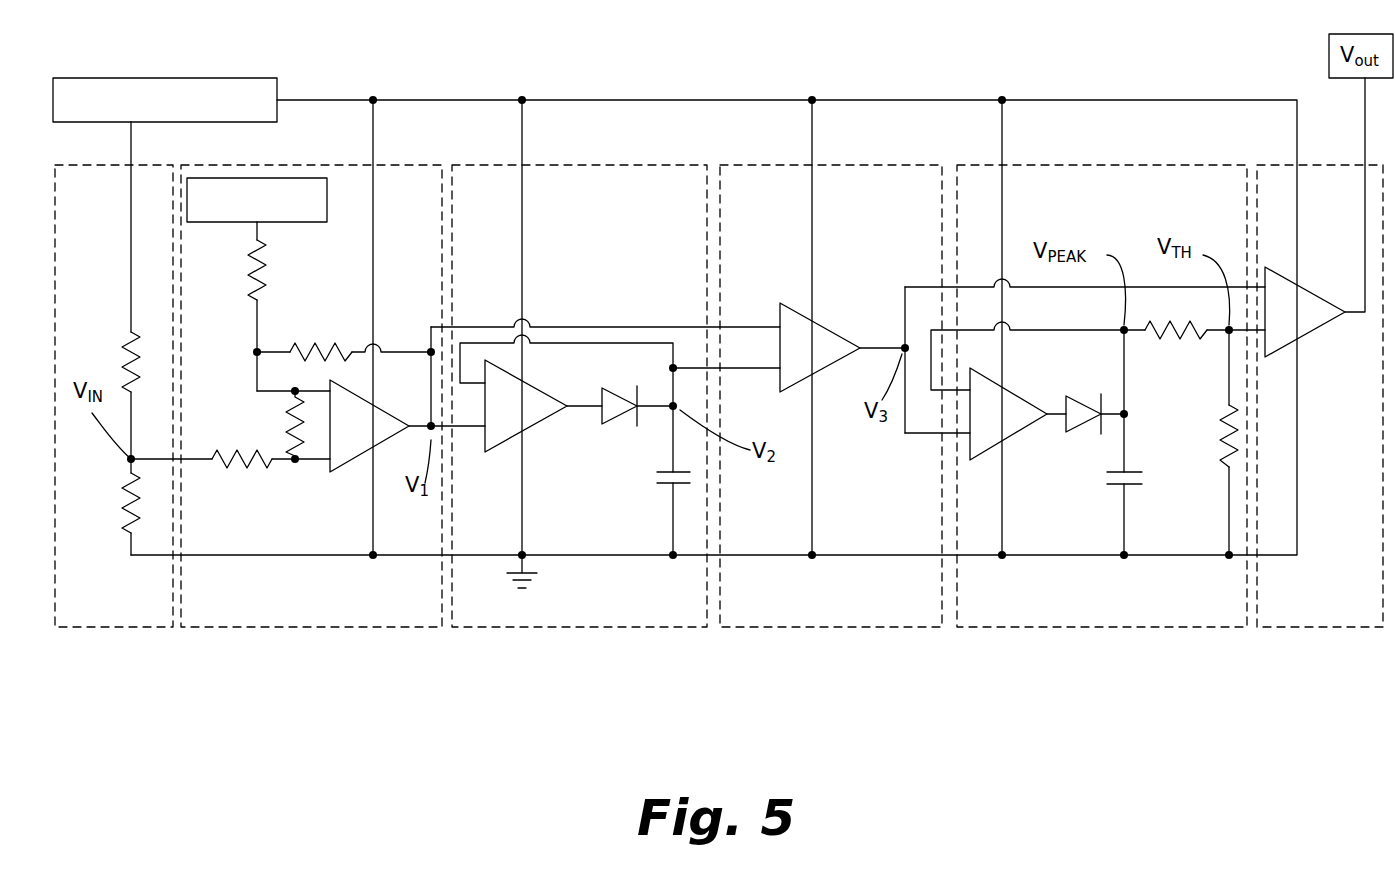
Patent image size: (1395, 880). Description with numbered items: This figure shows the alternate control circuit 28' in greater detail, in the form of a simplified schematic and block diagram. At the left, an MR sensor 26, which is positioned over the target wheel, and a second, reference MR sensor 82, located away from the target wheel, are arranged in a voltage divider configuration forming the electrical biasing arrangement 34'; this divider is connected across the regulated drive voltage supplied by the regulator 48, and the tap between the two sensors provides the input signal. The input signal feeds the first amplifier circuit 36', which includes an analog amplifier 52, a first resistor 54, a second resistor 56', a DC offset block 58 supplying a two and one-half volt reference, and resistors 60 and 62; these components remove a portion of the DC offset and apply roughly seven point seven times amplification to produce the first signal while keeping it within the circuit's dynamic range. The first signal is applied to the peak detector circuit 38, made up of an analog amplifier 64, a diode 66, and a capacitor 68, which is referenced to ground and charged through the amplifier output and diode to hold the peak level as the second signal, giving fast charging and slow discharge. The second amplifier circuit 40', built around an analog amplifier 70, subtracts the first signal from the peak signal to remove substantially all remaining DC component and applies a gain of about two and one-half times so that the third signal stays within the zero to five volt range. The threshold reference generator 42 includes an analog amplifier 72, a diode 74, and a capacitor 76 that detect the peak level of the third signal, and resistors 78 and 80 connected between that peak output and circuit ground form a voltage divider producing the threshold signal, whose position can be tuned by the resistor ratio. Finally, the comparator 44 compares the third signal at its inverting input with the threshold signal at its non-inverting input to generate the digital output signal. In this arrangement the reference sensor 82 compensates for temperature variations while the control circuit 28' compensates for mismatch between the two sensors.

The control circuit 28' is at (714, 290).
The regulator 48 is at (268, 78).
The DC offset block 58 is at (297, 178).
The electrical biasing arrangement 34' is at (114, 446).
The first amplifier circuit 36' is at (311, 446).
The peak detector circuit 38 is at (560, 627).
The second amplifier circuit 40' is at (831, 446).
The threshold reference generator 42 is at (1082, 627).
The second MR sensor 82 is at (123, 343).
The MR sensor 26 is at (120, 505).
The resistor 60 is at (250, 272).
The resistor 62 is at (338, 345).
The second resistor 56' is at (270, 425).
The first resistor 54 is at (235, 463).
The analog amplifier 52 is at (386, 406).
The analog amplifier 64 is at (542, 390).
The diode 66 is at (615, 423).
The capacitor 68 is at (667, 486).
The analog amplifier 70 is at (850, 342).
The analog amplifier 72 is at (1025, 435).
The diode 74 is at (1085, 398).
The capacitor 76 is at (1110, 487).
The resistor 78 is at (1188, 340).
The resistor 80 is at (1240, 435).
The comparator 44 is at (1300, 336).